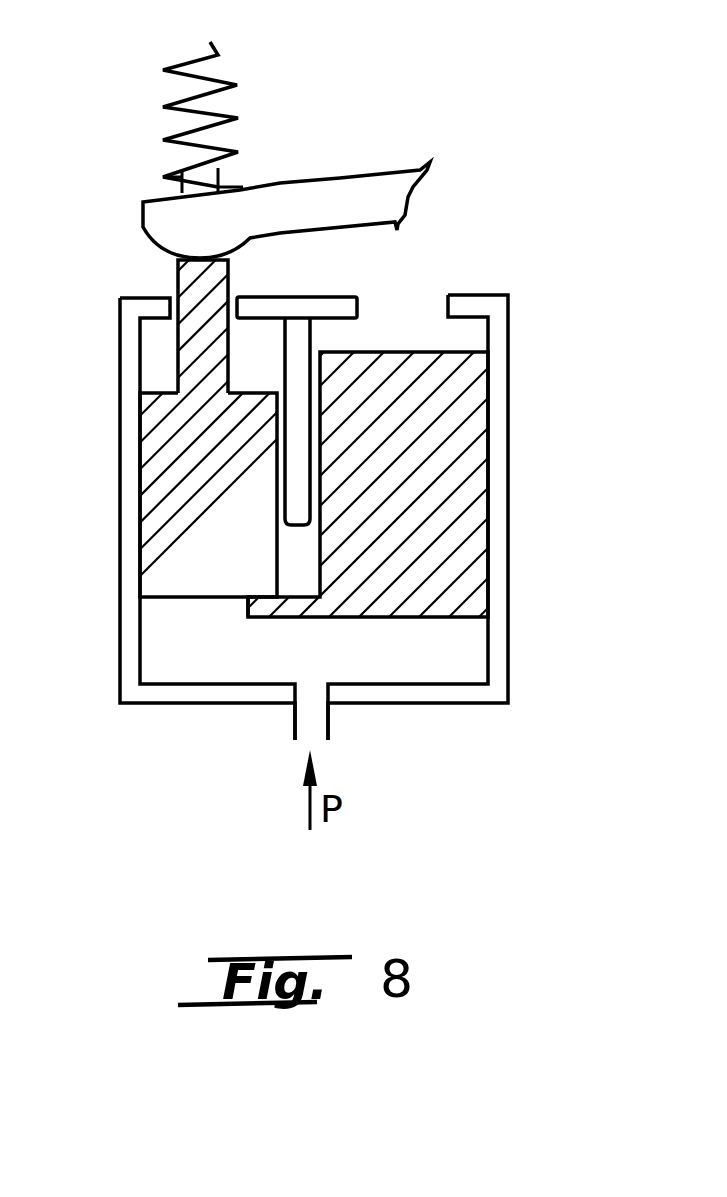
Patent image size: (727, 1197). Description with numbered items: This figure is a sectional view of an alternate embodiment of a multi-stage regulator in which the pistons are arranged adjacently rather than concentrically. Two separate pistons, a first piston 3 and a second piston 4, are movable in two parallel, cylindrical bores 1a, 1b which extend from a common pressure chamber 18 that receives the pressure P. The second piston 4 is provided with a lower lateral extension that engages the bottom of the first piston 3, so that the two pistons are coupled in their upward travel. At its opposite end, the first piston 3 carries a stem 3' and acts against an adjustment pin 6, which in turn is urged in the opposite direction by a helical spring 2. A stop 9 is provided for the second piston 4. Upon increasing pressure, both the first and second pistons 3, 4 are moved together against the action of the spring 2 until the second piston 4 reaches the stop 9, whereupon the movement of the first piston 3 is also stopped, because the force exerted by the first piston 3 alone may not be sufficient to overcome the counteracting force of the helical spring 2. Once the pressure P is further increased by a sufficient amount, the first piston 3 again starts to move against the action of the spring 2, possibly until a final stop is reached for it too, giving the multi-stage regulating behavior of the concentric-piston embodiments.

The helical spring 2 is at (233, 110).
The adjustment pin 6 is at (195, 220).
The piston stem 3' is at (137, 324).
The cylindrical bore 1b is at (165, 347).
The stop 9 is at (338, 320).
The cylindrical bore 1a is at (450, 335).
The second piston 4 is at (430, 473).
The first piston 3 is at (228, 438).
The common pressure chamber 18 is at (467, 652).